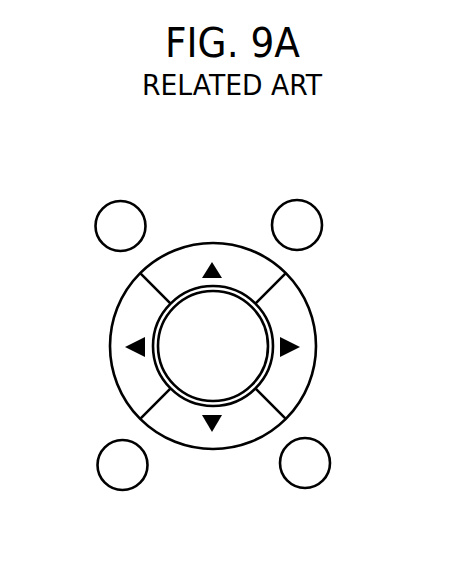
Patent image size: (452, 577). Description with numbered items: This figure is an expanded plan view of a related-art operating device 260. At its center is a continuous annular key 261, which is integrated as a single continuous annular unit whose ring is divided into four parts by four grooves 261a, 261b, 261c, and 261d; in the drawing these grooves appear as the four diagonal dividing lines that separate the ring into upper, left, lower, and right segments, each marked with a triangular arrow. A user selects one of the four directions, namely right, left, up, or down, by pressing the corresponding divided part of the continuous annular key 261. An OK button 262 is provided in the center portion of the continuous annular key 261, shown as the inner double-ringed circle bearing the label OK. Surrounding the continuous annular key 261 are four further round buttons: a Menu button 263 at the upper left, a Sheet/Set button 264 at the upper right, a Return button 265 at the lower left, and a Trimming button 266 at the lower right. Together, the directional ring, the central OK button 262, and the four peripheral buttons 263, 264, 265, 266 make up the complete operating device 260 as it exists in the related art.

The operating device 260 is at (385, 159).
The continuous annular key 261 is at (303, 307).
The groove 261a is at (263, 287).
The groove 261b is at (148, 303).
The groove 261c is at (153, 402).
The groove 261d is at (278, 402).
The OK button 262 is at (193, 388).
The Menu button 263 is at (105, 229).
The Sheet/Set button 264 is at (310, 223).
The Return button 265 is at (108, 469).
The Trimming button 266 is at (320, 463).